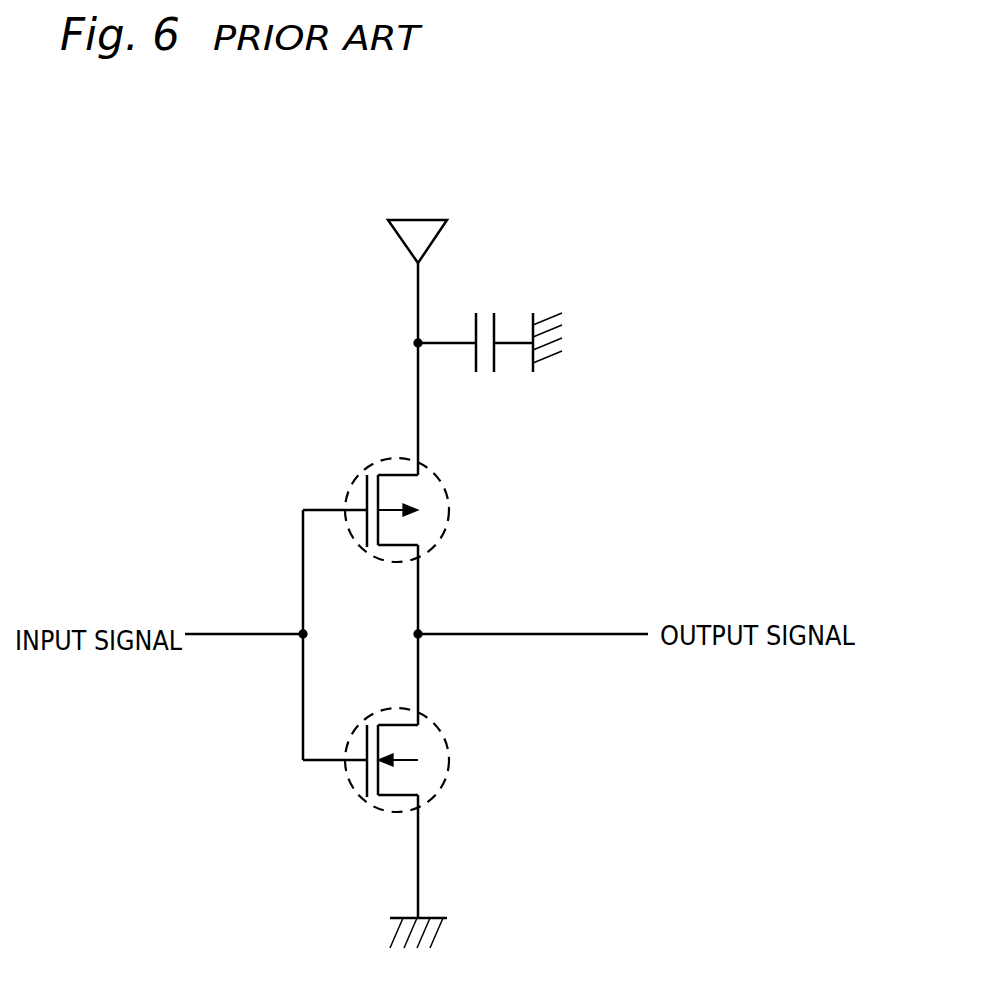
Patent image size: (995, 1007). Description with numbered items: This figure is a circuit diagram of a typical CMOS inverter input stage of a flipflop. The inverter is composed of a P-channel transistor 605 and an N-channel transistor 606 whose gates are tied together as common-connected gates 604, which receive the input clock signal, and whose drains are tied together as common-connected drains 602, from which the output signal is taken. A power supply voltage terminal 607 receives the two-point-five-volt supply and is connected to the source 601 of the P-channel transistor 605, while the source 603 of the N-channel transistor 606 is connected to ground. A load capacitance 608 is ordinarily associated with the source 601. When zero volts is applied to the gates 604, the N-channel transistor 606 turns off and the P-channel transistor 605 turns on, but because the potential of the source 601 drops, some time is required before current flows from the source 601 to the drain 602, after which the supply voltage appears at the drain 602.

The source of the P-channel transistor 601 is at (418, 413).
The common-connected drains 602 is at (418, 662).
The source of the N-channel transistor 603 is at (418, 862).
The common-connected gates 604 is at (303, 703).
The P-channel transistor 605 is at (448, 507).
The N-channel transistor 606 is at (450, 758).
The power supply voltage terminal 607 is at (420, 220).
The load capacitance 608 is at (488, 313).